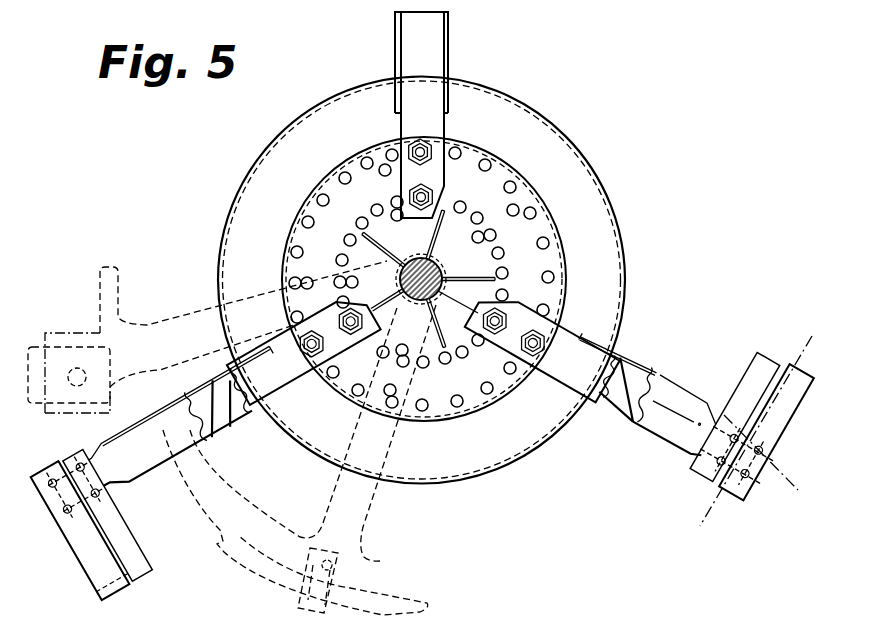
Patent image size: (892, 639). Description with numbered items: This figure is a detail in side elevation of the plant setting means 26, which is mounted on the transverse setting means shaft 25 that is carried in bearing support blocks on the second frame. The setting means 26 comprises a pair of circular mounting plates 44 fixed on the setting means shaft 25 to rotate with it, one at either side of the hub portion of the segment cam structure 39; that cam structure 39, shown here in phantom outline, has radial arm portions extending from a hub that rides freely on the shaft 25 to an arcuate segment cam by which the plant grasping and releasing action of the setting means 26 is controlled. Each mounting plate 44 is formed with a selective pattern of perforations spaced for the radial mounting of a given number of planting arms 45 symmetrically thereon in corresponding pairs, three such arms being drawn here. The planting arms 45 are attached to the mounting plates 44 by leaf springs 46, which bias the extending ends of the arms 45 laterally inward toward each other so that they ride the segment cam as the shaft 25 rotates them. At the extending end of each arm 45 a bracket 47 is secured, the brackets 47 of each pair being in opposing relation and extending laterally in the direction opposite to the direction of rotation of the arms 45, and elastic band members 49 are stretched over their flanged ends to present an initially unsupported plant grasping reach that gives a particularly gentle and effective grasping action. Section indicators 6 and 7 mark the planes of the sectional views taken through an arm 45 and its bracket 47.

The section line 6- 6 is at (389, 276).
The section line 7- 7 is at (816, 340).
The setting means shaft 25 is at (445, 272).
The plant setting means 26 is at (592, 156).
The segment cam structure 39 is at (161, 320).
The circular mounting plates 44 is at (521, 108).
The planting arms 45 is at (667, 396).
The leaf springs 46 is at (433, 43).
The brackets 47 is at (773, 373).
The elastic band members 49 is at (739, 390).